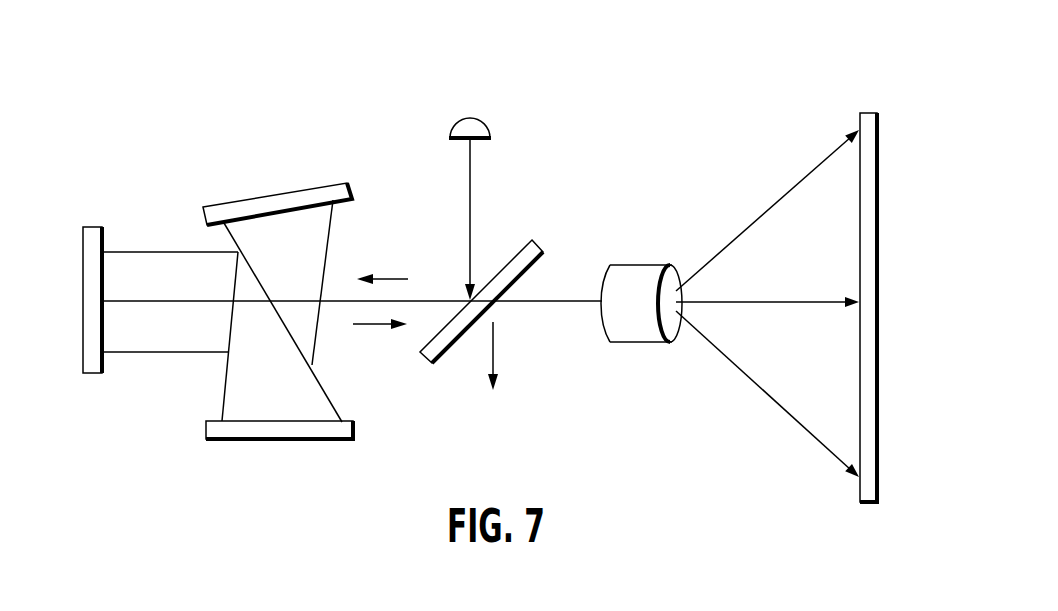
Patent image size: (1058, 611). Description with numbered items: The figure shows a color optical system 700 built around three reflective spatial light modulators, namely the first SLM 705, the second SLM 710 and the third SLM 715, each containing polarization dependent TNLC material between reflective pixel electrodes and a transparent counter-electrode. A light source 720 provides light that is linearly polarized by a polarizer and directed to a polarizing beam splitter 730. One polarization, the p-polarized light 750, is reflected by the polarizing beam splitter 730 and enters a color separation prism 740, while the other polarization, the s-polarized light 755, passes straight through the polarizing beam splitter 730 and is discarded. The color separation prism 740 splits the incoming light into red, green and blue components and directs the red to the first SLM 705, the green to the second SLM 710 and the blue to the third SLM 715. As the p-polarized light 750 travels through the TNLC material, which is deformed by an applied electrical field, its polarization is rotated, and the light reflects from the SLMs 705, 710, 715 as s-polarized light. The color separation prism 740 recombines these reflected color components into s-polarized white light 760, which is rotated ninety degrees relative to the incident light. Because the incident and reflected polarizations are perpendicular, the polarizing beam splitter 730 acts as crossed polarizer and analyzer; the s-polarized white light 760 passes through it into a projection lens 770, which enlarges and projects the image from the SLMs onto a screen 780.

The color optical system 700 is at (594, 466).
The first SLM 705 is at (330, 190).
The second SLM 710 is at (90, 227).
The third SLM 715 is at (325, 430).
The light source 720 is at (485, 122).
The polarizing beam splitter 730 is at (537, 245).
The color separation prism 740 is at (352, 378).
The p-polarized light 750 is at (390, 277).
The s-polarized light 755 is at (495, 353).
The s-polarized light 760 is at (385, 333).
The projection lens 770 is at (640, 270).
The screen 780 is at (868, 112).